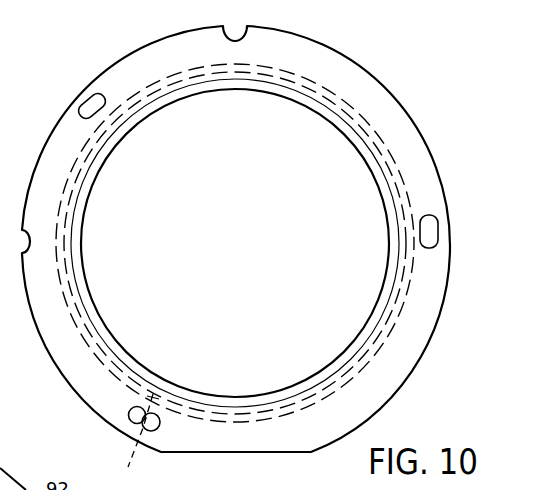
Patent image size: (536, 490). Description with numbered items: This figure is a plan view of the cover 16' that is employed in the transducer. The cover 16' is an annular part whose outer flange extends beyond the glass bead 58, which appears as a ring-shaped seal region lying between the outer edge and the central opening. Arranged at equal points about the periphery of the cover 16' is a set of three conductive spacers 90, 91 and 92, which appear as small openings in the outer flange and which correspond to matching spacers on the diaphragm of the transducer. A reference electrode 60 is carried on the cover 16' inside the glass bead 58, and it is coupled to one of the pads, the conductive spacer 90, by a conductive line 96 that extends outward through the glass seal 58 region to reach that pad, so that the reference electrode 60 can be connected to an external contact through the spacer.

The cover 16' is at (236, 239).
The glass bead 58 is at (391, 333).
The reference electrode 60 is at (393, 307).
The conductive spacer 90 is at (129, 416).
The conductive spacer 91 is at (427, 219).
The conductive spacer 92 is at (90, 96).
The conductive line 96 is at (138, 442).